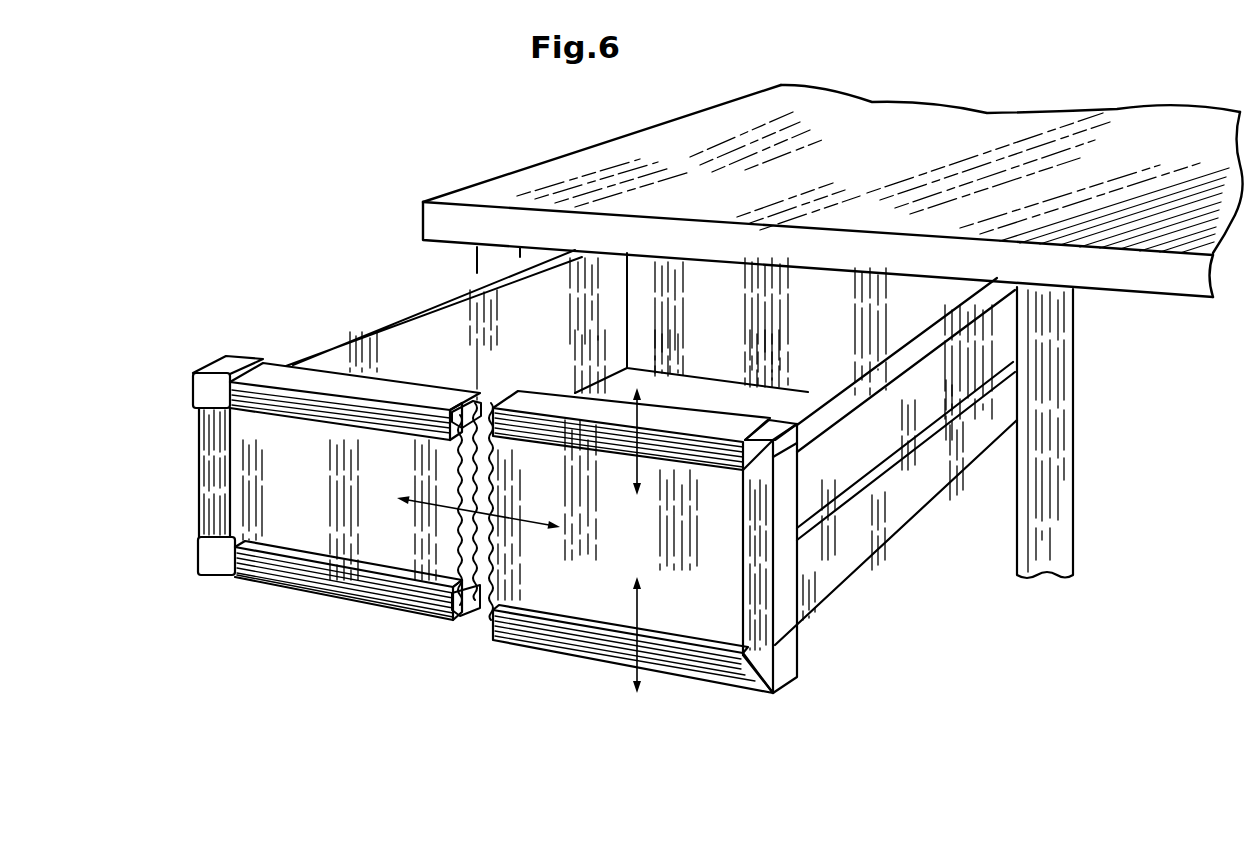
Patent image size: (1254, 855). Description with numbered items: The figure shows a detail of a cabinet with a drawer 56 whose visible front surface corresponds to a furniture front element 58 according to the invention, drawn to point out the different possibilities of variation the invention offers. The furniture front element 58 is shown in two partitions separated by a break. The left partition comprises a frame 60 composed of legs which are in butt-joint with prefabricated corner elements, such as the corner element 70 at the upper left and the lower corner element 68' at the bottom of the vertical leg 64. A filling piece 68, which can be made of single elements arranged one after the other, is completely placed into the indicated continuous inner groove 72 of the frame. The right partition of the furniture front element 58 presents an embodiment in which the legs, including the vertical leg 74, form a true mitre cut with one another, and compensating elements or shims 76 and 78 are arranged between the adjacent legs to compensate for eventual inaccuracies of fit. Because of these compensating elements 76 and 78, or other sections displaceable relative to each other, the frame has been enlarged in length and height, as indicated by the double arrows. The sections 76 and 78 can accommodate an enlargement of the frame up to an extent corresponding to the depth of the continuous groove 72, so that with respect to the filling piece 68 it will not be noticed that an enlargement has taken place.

The drawer 56 is at (900, 507).
The furniture front element 58 is at (535, 665).
The frame 60 is at (312, 592).
The leg 64 is at (208, 470).
The filling piece 68 is at (300, 491).
The lower corner block 68' is at (216, 584).
The prefabricated corner element 70 is at (222, 370).
The continuous inner groove 72 is at (465, 618).
The leg 74 is at (783, 612).
The compensating element or shim 76 is at (760, 693).
The compensating element or shim 78 is at (750, 463).